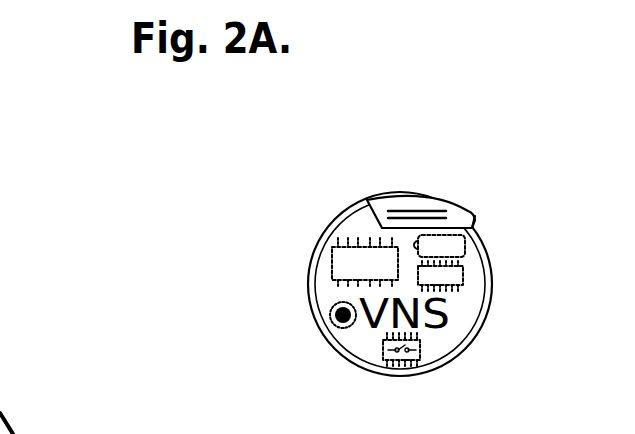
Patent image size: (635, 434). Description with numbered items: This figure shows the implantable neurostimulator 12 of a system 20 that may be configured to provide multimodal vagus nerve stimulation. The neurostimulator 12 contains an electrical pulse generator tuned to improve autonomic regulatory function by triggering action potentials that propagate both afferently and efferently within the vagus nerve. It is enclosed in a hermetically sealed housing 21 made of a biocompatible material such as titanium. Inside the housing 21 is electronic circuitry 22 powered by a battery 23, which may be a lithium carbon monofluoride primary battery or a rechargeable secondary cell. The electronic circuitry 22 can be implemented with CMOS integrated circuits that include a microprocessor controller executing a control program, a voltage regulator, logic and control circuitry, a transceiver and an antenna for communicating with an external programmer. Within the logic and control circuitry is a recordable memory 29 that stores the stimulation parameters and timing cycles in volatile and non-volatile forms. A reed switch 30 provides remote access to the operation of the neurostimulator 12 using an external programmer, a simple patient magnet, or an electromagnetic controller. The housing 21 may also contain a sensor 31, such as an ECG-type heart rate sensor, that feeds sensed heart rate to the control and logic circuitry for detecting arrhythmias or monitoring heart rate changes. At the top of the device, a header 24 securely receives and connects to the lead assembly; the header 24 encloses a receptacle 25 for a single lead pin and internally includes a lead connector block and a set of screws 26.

The system 20 is at (197, 117).
The neurostimulator 12 is at (329, 229).
The header 24 is at (395, 158).
The set of screws 26 is at (429, 178).
The receptacle 25 is at (488, 215).
The electronic circuitry 22 is at (331, 277).
The battery 23 is at (466, 253).
The recordable memory 29 is at (466, 283).
The sensor 31 is at (331, 323).
The reed switch 30 is at (420, 352).
The housing 21 is at (360, 349).